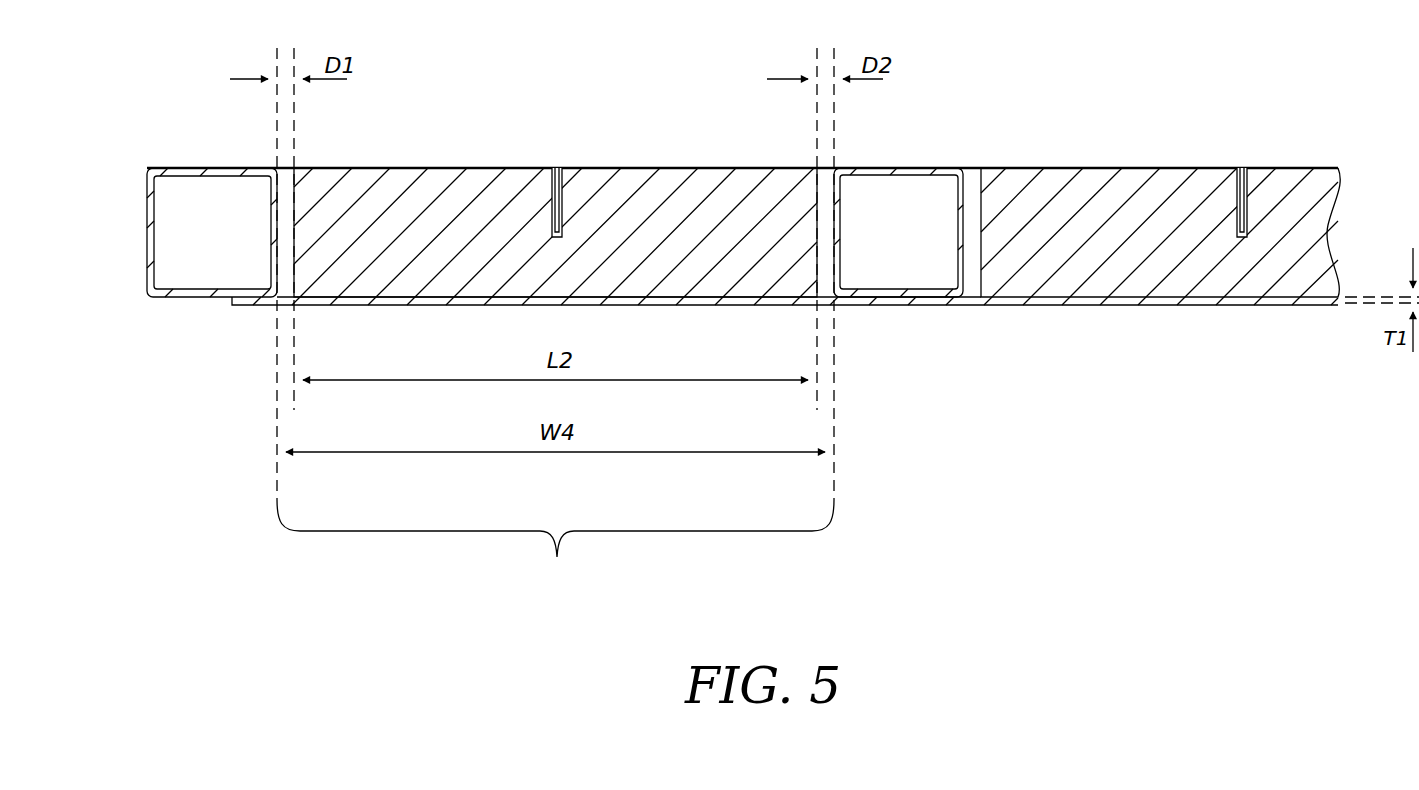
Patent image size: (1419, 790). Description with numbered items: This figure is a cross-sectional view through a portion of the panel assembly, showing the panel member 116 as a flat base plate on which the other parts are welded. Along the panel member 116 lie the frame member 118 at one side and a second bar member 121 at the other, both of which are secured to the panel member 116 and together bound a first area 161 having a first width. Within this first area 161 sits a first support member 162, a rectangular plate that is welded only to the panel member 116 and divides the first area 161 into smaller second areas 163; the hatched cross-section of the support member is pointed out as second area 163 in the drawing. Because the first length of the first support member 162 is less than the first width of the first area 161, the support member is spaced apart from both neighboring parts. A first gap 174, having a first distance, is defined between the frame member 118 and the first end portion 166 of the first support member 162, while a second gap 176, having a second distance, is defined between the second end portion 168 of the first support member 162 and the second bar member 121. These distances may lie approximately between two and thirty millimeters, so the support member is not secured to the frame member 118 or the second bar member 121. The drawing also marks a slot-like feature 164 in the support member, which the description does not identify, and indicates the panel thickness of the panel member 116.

The panel member 116 is at (1128, 305).
The frame member 118 is at (128, 222).
The second bar member 121 is at (898, 306).
The first area 161 is at (555, 544).
The first support member 162 is at (677, 193).
The second area 163 is at (428, 272).
The slot 164 is at (562, 205).
The first end portion 166 is at (280, 247).
The second end portion 168 is at (831, 248).
The first gap 174 is at (287, 186).
The second gap 176 is at (821, 201).